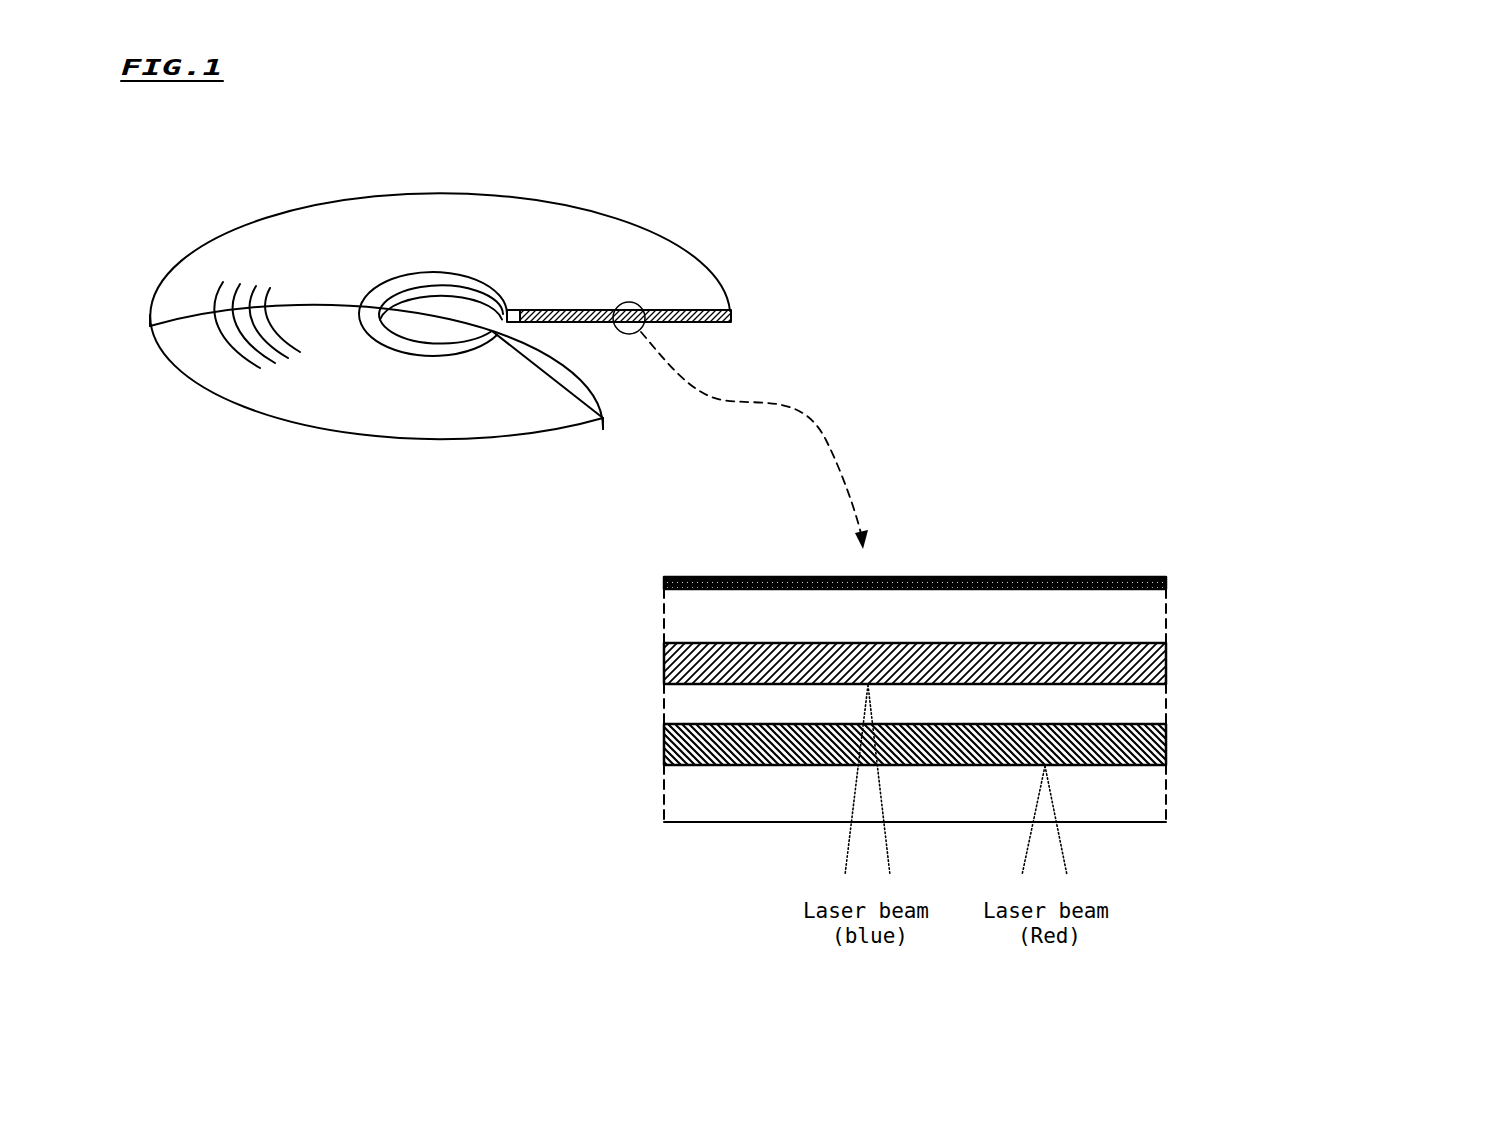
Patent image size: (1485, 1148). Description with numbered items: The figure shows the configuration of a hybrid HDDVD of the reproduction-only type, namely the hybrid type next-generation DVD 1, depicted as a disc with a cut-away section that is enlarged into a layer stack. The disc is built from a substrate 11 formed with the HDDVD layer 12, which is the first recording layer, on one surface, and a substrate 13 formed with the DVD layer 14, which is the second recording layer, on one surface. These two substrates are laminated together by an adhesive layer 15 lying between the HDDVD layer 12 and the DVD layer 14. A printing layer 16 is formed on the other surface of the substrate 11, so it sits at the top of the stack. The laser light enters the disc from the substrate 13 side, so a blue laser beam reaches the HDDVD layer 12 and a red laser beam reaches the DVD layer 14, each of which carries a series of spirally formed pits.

The hybrid type next-generation DVD 1 is at (636, 260).
The substrate 11 is at (1183, 612).
The HDDVD layer 12 is at (661, 656).
The substrate 13 is at (1183, 782).
The DVD layer 14 is at (661, 741).
The adhesive layer 15 is at (1183, 697).
The printing layer 16 is at (1062, 538).